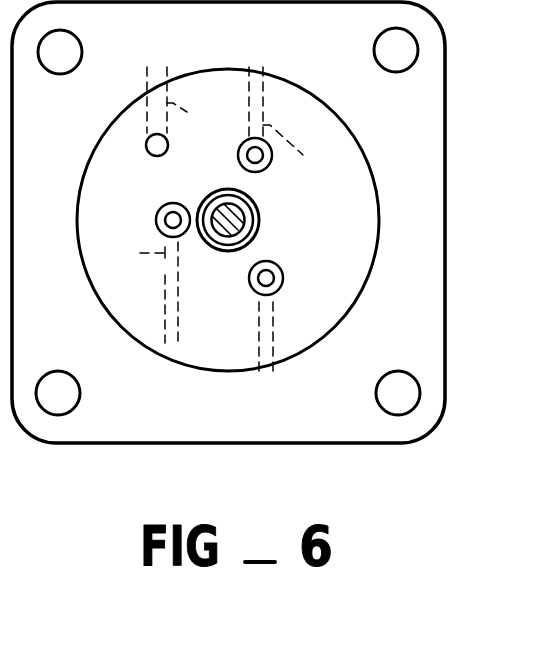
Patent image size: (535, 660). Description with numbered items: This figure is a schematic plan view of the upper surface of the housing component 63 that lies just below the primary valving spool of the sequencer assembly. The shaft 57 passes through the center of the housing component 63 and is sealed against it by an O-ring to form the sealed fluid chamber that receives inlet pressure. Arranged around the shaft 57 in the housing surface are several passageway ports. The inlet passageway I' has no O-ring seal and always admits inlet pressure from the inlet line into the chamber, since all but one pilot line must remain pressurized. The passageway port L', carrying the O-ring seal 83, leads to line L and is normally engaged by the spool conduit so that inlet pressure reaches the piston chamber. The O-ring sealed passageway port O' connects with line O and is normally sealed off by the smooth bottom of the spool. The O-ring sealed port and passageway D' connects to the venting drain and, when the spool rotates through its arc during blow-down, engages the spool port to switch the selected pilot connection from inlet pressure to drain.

The housing component 63 is at (345, 263).
The shaft 57 is at (240, 220).
The O-ring seal 83 is at (163, 210).
The inlet passageway I' is at (176, 111).
The passageway port O' is at (286, 124).
The passageway port L' is at (147, 281).
The port and passageway D' is at (284, 318).